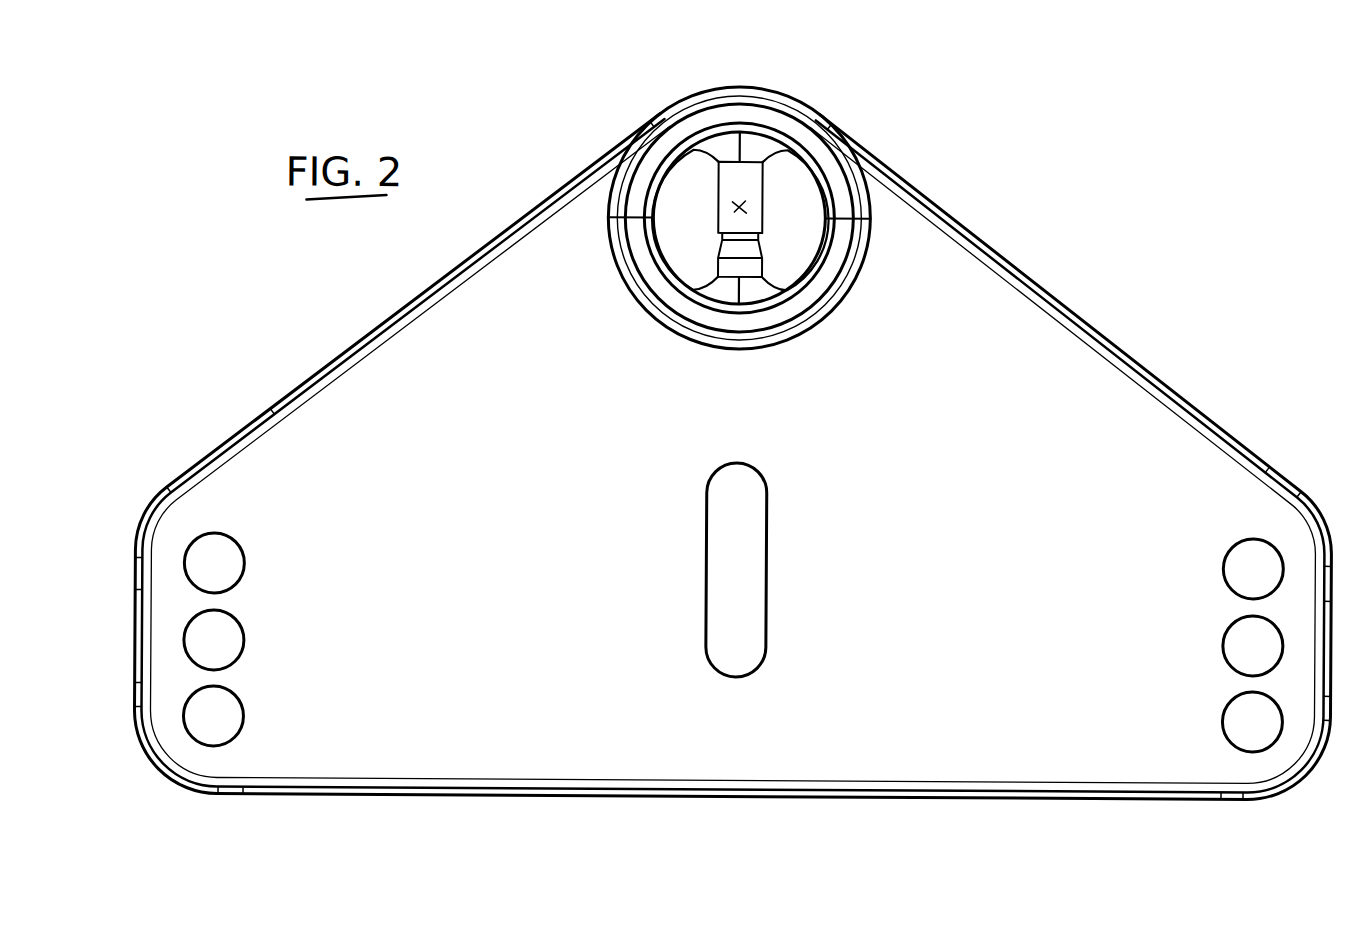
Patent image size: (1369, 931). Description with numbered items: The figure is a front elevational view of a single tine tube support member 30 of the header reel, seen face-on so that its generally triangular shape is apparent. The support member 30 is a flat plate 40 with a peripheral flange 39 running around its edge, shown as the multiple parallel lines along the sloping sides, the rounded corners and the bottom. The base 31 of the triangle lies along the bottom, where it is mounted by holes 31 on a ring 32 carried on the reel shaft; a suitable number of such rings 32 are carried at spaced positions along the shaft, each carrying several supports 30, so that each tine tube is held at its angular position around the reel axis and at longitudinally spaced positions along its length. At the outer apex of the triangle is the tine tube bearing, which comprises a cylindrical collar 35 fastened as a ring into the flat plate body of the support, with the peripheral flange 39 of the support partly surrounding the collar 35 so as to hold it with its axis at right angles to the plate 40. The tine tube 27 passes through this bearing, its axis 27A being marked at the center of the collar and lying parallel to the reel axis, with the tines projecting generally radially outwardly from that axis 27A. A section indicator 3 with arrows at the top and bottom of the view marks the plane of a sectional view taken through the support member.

The section line for FIG. 3 is at (788, 43).
The bearing bore 27 is at (619, 296).
The bore center axis 27A is at (737, 208).
The mounting plate 30 is at (1018, 338).
The plate edge 31 is at (893, 214).
The mounting holes 32 is at (1235, 575).
The cylindrical boss 35 is at (684, 332).
The chamfered edge 39 is at (977, 232).
The elongated slot 40 is at (962, 548).